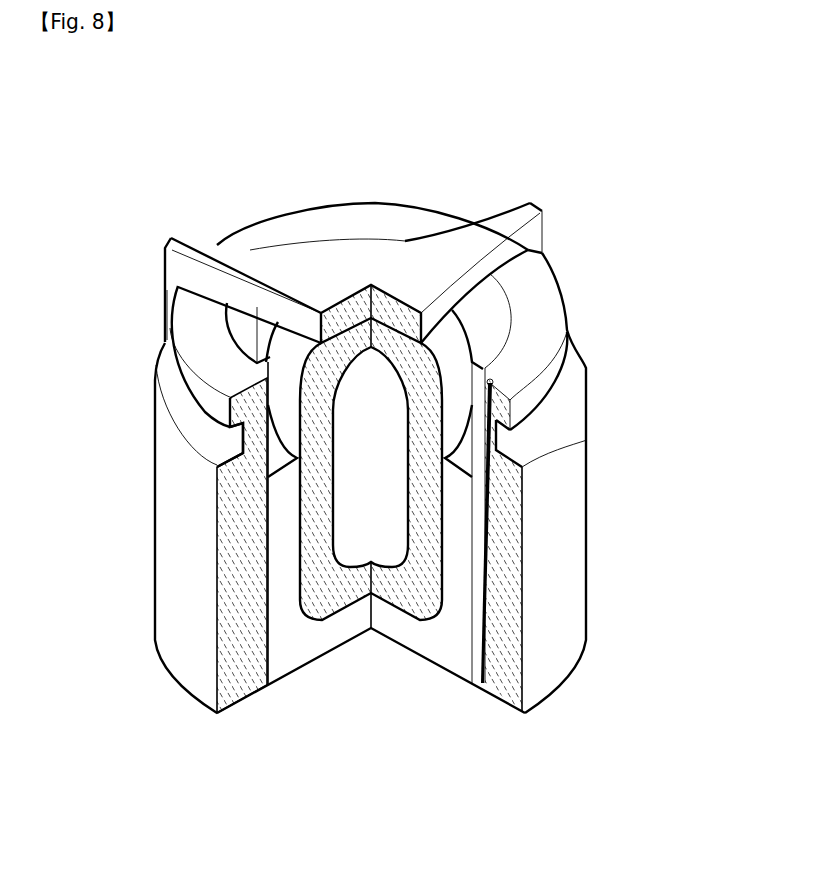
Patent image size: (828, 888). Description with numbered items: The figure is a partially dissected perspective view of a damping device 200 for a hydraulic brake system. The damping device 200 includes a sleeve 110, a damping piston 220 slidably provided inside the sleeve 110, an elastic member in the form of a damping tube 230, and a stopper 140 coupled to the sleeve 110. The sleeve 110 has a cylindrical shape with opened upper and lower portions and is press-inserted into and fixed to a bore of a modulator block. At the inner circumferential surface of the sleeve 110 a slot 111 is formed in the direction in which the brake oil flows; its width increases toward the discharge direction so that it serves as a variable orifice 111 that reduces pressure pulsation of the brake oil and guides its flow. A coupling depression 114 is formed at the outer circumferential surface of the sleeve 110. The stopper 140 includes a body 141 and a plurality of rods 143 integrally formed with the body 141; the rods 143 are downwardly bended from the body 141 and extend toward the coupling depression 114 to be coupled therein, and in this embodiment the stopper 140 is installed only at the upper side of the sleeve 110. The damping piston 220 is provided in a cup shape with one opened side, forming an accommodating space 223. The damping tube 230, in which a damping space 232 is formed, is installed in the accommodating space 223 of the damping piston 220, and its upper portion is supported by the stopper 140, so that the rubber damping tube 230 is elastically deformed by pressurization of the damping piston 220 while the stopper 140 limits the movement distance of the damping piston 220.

The damping device 200 is at (560, 186).
The sleeve 110 is at (570, 527).
The slot 111 is at (493, 381).
The coupling depression 114 is at (517, 444).
The stopper 140 is at (437, 249).
The body 141 is at (315, 265).
The rods 143 is at (165, 290).
The damping piston 220 is at (277, 575).
The accommodating space 223 is at (327, 607).
The damping tube 230 is at (425, 553).
The damping space 232 is at (392, 476).